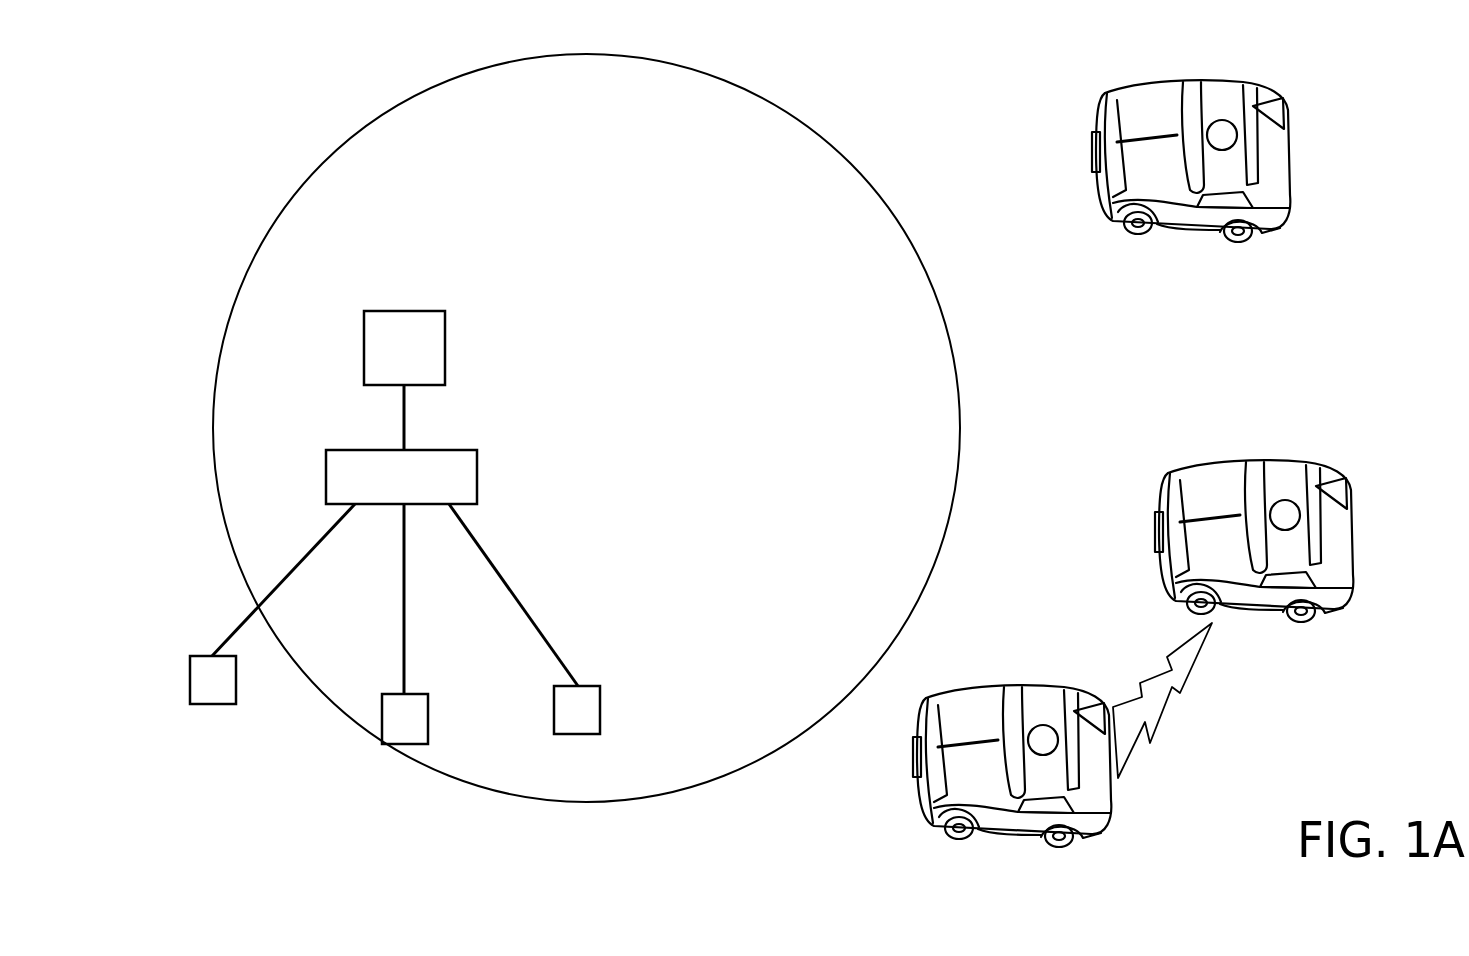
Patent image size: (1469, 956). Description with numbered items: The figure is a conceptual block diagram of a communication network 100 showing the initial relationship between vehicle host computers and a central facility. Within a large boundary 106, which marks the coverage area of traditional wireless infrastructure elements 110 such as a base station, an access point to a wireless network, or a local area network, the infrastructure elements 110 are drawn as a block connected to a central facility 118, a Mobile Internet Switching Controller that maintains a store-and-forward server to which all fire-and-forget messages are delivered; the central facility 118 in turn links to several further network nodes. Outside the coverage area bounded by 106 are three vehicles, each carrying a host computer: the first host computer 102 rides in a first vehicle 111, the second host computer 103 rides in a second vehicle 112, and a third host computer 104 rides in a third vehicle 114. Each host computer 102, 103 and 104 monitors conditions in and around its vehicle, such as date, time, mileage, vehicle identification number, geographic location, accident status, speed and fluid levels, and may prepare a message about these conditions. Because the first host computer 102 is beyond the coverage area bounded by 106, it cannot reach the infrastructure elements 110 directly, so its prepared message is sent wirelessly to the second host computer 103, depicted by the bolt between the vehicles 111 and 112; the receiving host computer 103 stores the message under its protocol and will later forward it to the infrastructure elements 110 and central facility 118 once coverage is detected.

The communication network 100 is at (347, 119).
The first host computer 102 is at (1043, 740).
The second host computer 103 is at (1286, 516).
The third host computer 104 is at (1223, 134).
The coverage area boundary 106 is at (541, 808).
The wireless infrastructure elements 110 is at (396, 307).
The first vehicle 111 is at (1080, 851).
The second vehicle 112 is at (1322, 624).
The third vehicle 114 is at (1267, 245).
The central facility 118 is at (472, 513).